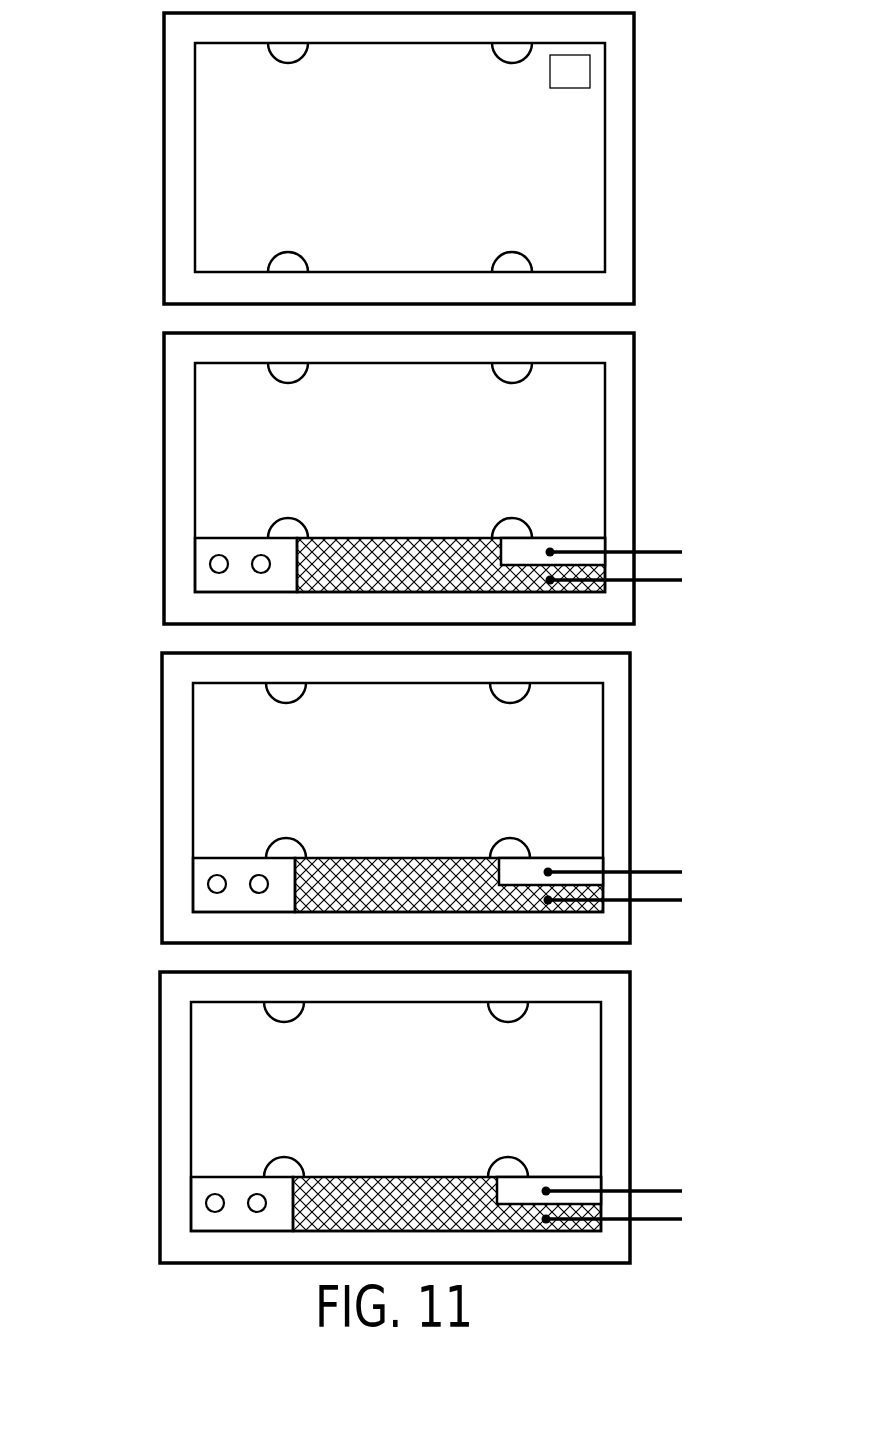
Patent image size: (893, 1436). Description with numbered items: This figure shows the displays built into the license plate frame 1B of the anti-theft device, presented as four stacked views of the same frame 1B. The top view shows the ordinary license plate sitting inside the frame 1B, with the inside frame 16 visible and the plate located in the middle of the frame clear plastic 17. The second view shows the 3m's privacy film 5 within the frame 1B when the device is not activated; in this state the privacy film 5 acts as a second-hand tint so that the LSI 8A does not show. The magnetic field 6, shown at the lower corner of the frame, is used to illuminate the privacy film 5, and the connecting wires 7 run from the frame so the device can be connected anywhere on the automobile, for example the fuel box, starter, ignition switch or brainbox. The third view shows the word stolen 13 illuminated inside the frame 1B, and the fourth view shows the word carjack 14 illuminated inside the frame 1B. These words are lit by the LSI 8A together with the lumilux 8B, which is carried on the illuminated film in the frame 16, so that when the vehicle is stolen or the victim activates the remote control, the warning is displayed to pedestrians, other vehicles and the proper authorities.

The license plate frame 1B is at (621, 87).
The 3m's privacy film 5 is at (570, 484).
The magnetic field 6 is at (217, 533).
The connecting wires 7 is at (684, 557).
The LSI 8A is at (535, 932).
The lumilux 8B is at (575, 773).
The stolen 13 is at (526, 921).
The carjack 14 is at (574, 1152).
The inside frame 16 is at (410, 527).
The frame clear plastic 17 is at (553, 209).